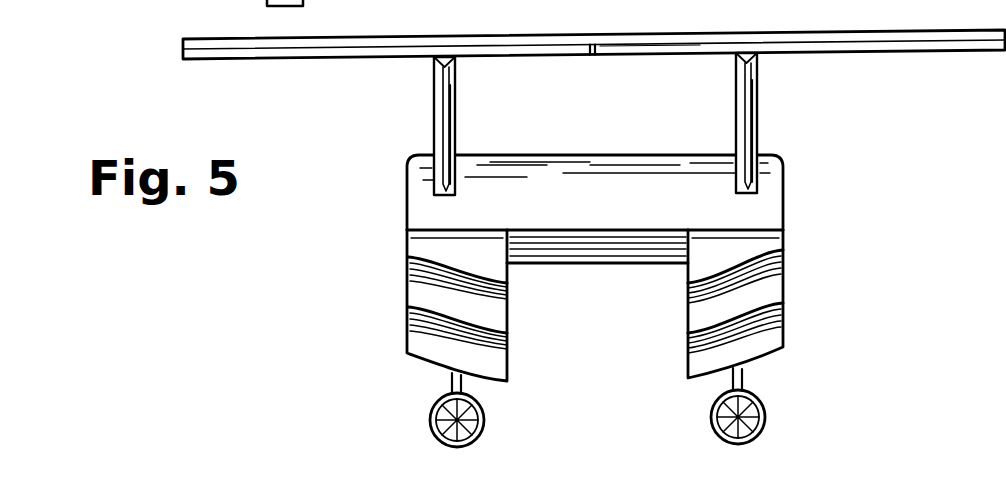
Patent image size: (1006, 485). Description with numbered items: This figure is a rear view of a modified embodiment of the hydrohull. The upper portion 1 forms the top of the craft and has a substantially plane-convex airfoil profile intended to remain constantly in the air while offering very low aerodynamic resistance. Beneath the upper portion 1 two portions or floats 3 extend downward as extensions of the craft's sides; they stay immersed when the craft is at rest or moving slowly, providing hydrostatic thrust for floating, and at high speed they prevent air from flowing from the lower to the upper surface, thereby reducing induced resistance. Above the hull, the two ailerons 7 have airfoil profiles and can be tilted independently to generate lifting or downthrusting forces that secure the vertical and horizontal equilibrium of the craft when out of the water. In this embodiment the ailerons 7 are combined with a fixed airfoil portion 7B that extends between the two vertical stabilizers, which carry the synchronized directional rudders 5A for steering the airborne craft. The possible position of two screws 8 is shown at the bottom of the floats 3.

The upper portion 1 is at (592, 163).
The portions or floats 3 is at (412, 291).
The synchronized directional rudders 5A is at (737, 110).
The ailerons 7 is at (398, 47).
The fixed airfoil portion 7B is at (580, 37).
The screws 8 is at (430, 420).